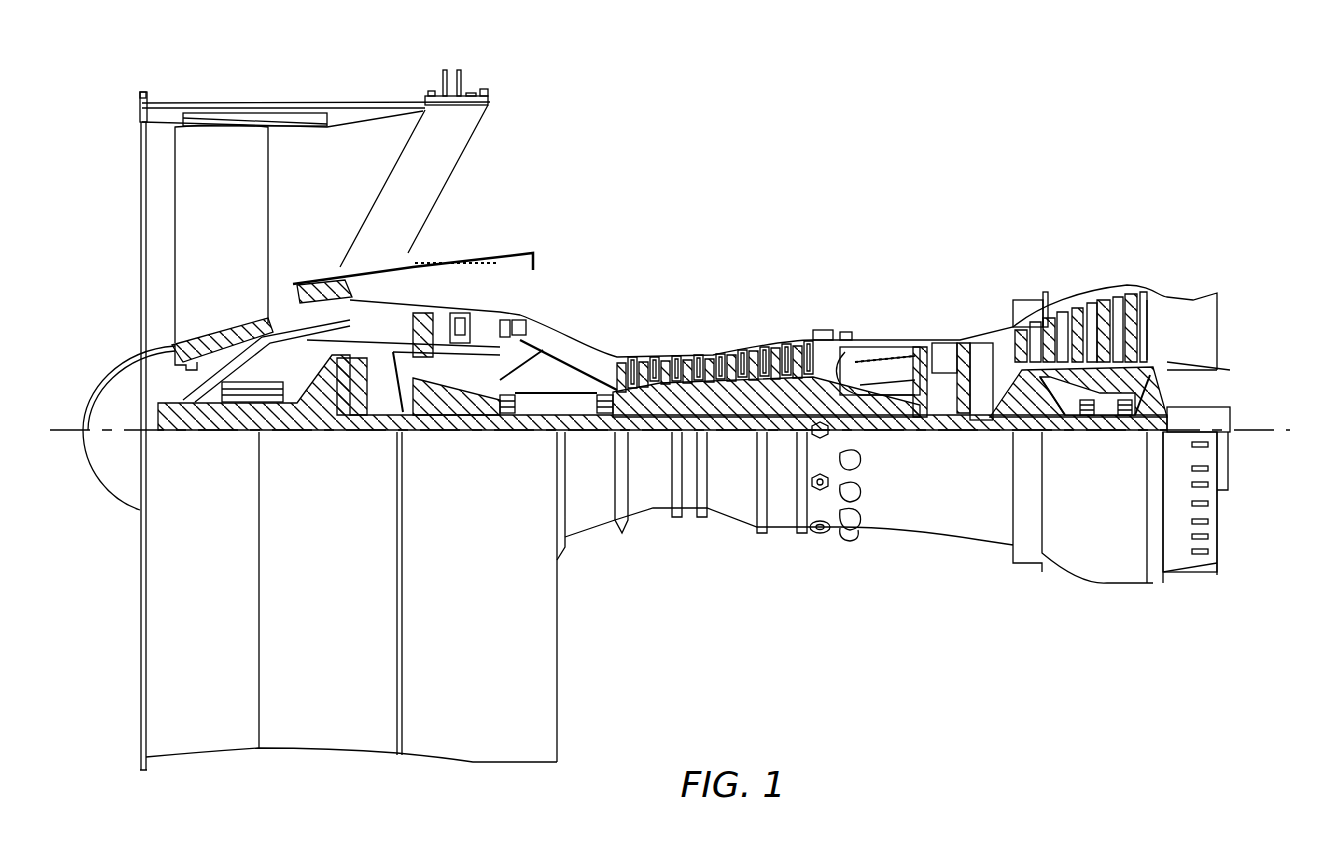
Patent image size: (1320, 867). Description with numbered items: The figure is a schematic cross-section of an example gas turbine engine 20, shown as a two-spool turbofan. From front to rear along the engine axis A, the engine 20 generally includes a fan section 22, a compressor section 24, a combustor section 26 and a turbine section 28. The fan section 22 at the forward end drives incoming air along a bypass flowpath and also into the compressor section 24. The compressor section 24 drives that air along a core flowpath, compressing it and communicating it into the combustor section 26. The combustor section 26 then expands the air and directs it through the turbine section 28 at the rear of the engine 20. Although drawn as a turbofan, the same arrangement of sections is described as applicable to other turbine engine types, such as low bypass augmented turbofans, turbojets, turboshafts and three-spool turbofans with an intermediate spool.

The gas turbine engine 20 is at (979, 158).
The fan section 22 is at (133, 82).
The compressor section 24 is at (407, 222).
The combustor section 26 is at (810, 222).
The turbine section 28 is at (1158, 222).
The engine central longitudinal axis A is at (1290, 436).